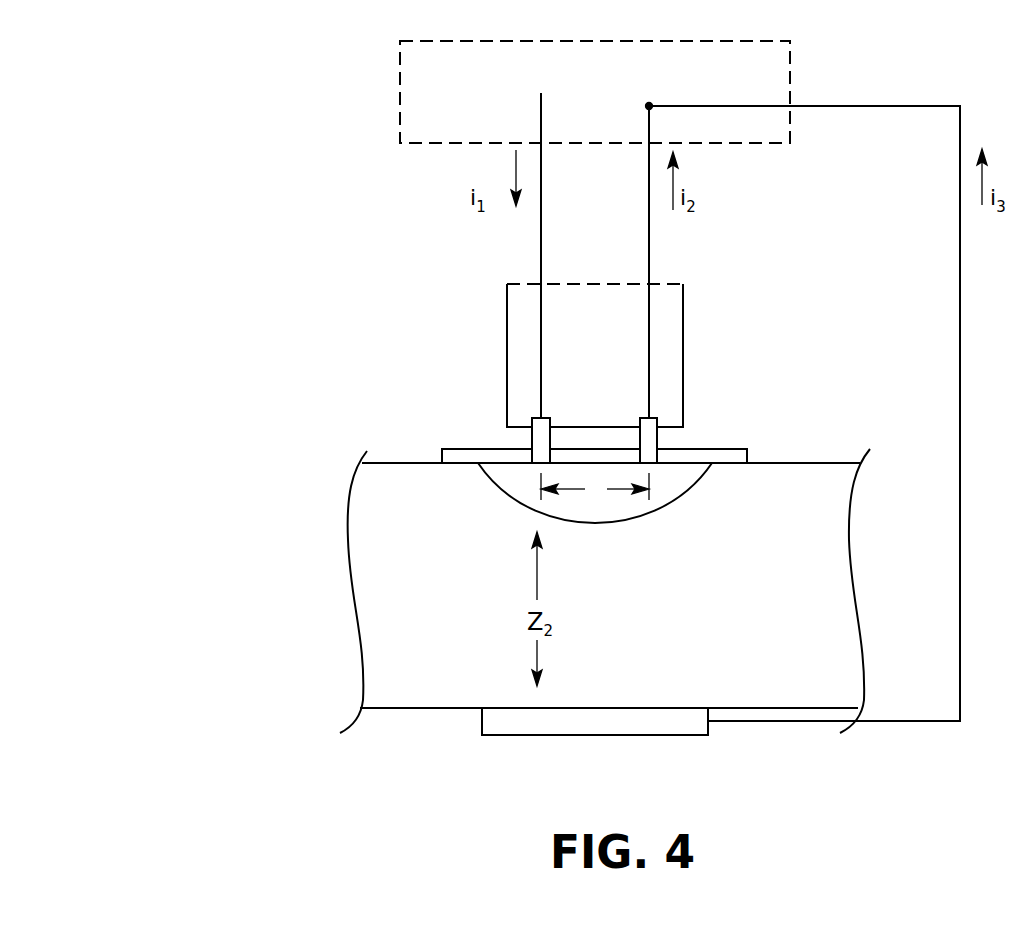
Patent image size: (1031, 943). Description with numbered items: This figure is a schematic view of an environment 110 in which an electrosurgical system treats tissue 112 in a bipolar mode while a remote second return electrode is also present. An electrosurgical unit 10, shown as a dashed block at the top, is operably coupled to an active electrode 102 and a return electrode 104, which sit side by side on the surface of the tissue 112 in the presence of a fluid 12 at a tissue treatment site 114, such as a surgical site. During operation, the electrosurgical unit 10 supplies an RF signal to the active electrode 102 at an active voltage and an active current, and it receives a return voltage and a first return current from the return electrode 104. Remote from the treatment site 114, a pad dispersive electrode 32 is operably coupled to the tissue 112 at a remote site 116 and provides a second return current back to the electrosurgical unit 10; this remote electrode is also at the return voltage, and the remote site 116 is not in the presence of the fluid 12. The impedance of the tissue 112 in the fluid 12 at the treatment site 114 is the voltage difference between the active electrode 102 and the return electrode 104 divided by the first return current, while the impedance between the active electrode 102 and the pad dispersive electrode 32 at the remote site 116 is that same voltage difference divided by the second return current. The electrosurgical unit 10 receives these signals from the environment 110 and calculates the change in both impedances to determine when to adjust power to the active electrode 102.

The electrosurgical unit 10 is at (793, 80).
The environment 110 is at (241, 312).
The tissue 112 is at (393, 456).
The fluid 12 is at (748, 456).
The active electrode 102 is at (531, 446).
The return electrode 104 is at (658, 446).
The tissue treatment site 114 is at (690, 493).
The remote site 116 is at (672, 706).
The pad dispersive electrode 32 is at (650, 736).